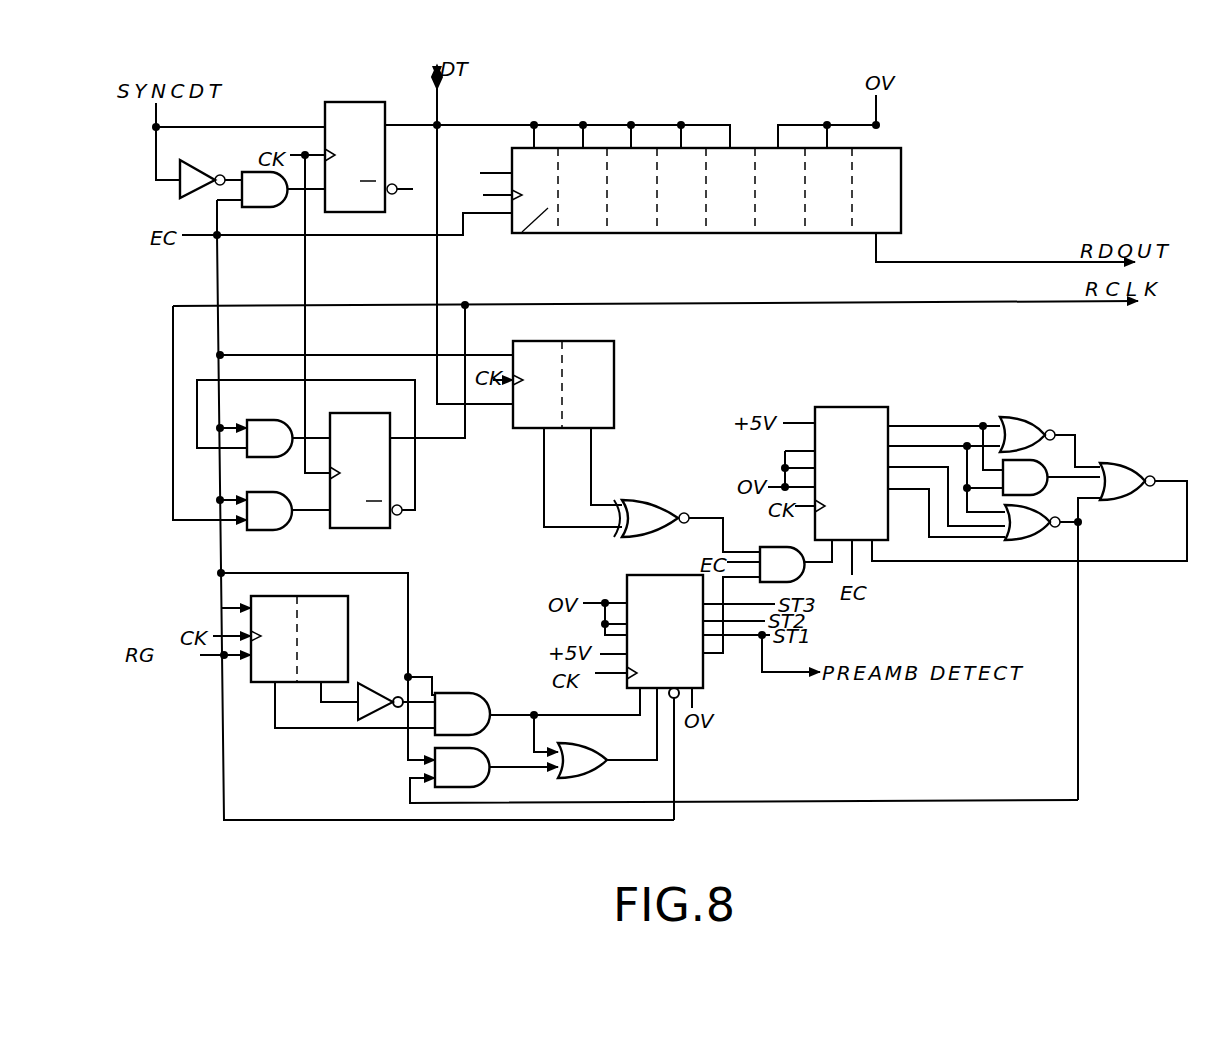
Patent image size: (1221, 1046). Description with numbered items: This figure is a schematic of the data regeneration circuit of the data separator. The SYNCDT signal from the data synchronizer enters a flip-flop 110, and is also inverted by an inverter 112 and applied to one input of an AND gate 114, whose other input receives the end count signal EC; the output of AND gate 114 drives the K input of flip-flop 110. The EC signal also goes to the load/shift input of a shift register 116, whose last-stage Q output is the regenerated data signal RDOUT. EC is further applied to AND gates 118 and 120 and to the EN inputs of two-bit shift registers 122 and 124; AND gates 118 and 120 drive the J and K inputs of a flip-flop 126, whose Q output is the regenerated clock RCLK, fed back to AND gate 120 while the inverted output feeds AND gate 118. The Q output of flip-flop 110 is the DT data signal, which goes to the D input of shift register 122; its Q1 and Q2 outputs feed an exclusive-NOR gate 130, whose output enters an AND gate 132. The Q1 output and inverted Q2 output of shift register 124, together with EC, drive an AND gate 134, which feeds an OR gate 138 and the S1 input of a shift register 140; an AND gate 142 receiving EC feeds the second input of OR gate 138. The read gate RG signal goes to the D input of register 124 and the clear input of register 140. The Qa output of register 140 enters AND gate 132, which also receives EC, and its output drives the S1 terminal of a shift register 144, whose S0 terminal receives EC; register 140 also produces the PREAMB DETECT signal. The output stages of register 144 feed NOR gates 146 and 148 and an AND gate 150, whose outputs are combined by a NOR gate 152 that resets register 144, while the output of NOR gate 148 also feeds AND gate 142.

The flip-flop 110 is at (350, 103).
The inverter 112 is at (185, 168).
The AND gate 114 is at (250, 212).
The shift register 116 is at (903, 168).
The AND gate 118 is at (278, 418).
The AND gate 120 is at (278, 492).
The two-bit shift register 122 is at (540, 341).
The two-bit shift register 124 is at (250, 683).
The flip-flop 126 is at (350, 414).
The exclusive-NOR gate 130 is at (645, 500).
The AND gate 132 is at (780, 547).
The AND gate 134 is at (462, 702).
The OR gate 138 is at (582, 748).
The shift register 140 is at (637, 575).
The AND gate 142 is at (478, 784).
The shift register 144 is at (885, 408).
The NOR gate 146 is at (1015, 417).
The NOR gate 148 is at (1020, 541).
The AND gate 150 is at (1045, 468).
The NOR gate 152 is at (1132, 465).